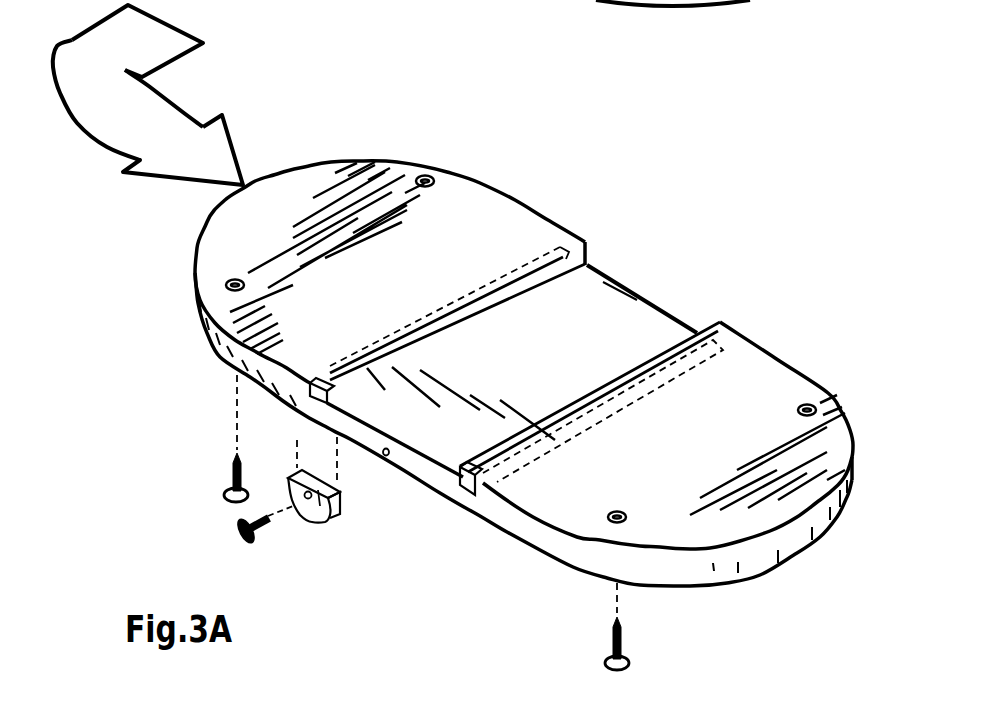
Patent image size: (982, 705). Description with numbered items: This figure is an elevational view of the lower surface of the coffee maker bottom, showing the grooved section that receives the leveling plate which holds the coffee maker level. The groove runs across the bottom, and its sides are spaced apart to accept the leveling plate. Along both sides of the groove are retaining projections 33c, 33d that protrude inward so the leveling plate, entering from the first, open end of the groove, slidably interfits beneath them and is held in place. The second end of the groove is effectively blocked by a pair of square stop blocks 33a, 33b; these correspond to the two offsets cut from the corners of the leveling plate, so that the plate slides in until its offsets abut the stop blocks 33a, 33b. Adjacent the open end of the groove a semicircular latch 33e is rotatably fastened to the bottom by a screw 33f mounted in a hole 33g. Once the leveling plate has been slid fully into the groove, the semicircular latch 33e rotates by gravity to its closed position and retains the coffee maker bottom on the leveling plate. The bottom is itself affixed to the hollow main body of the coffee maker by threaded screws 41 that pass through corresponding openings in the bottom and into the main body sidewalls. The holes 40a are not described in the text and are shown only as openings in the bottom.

The stop block 33a is at (587, 263).
The stop block 33b is at (693, 333).
The retaining projection 33c is at (354, 390).
The retaining projection 33d is at (485, 455).
The semicircular latch 33e is at (337, 522).
The screw 33f is at (262, 528).
The hole 33g is at (384, 449).
The mounting holes 40a is at (230, 282).
The threaded screw 41 is at (227, 478).